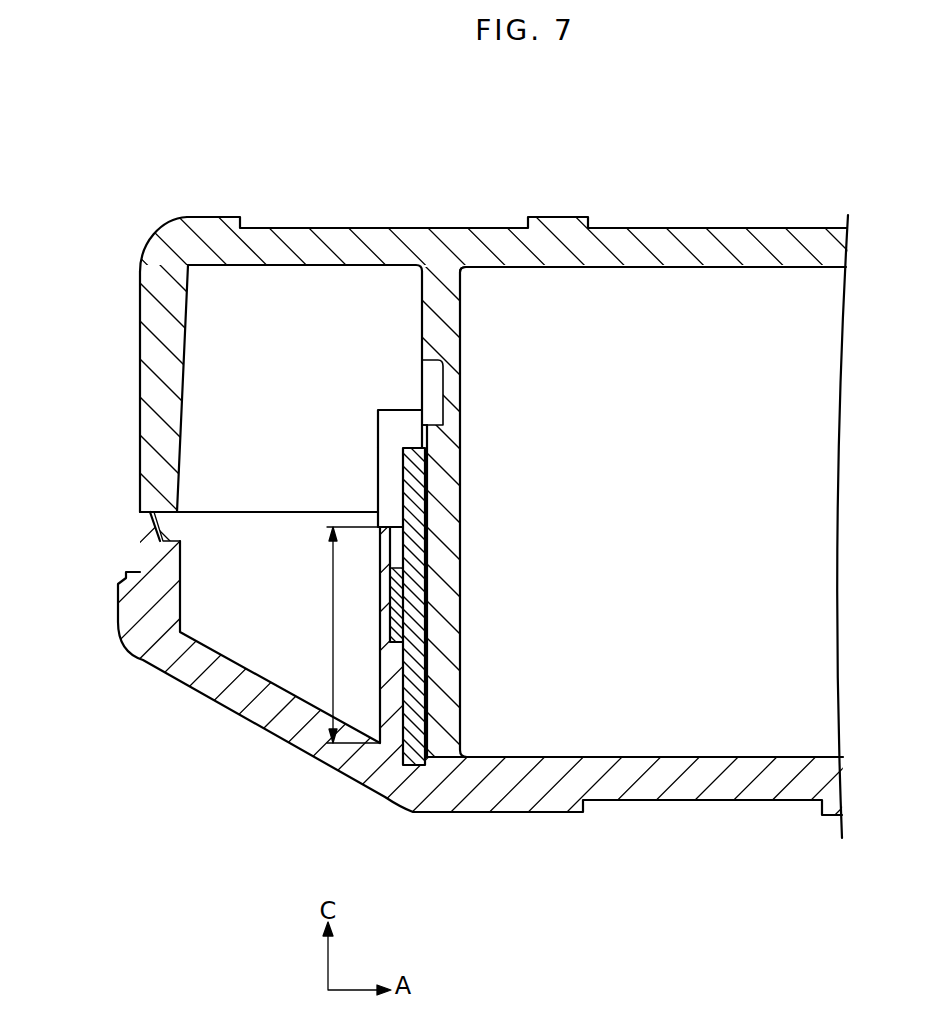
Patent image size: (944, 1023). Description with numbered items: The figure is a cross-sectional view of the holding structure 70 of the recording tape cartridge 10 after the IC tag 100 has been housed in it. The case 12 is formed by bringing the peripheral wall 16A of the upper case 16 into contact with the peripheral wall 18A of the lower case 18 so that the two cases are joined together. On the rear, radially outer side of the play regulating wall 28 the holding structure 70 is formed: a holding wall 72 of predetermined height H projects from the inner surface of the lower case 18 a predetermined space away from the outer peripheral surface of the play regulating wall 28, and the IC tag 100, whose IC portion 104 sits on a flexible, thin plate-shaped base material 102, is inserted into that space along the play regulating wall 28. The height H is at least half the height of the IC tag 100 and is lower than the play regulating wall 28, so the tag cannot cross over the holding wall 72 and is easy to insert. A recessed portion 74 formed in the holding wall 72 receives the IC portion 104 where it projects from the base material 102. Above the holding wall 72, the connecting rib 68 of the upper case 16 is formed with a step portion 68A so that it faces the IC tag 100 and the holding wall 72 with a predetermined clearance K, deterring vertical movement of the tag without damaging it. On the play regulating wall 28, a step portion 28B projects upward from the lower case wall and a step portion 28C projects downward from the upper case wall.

The recording tape cartridge 10 is at (667, 141).
The case 12 is at (143, 225).
The upper case 16 is at (727, 216).
The peripheral wall of upper case 16A is at (140, 316).
The lower case 18 is at (555, 833).
The peripheral wall of lower case 18A is at (138, 558).
The play regulating wall 28 is at (458, 320).
The step portion 28B is at (445, 378).
The step portion 28C is at (434, 432).
The connecting rib 68 is at (213, 377).
The step portion 68A is at (398, 432).
The holding structure 70 is at (390, 493).
The holding wall 72 is at (376, 520).
The recessed portion 74 is at (424, 546).
The IC tag 100 is at (421, 429).
The base material 102 is at (402, 574).
The IC portion 104 is at (398, 606).
The clearance K is at (381, 424).
The height of holding wall H is at (333, 636).